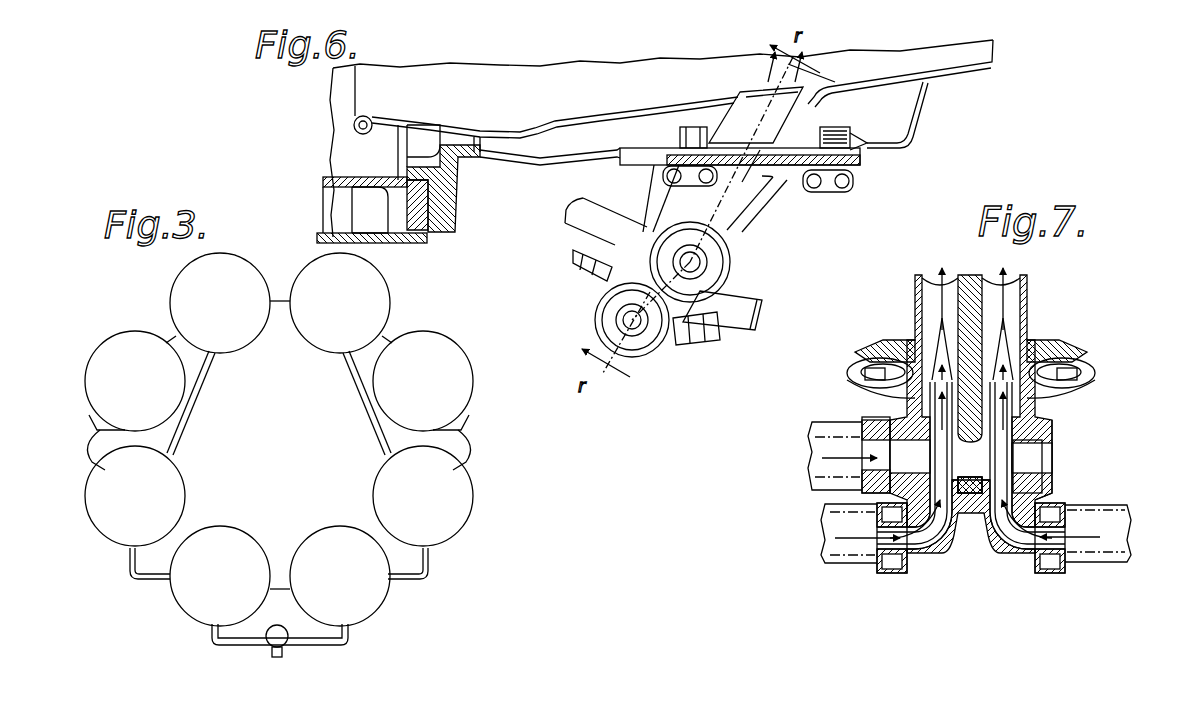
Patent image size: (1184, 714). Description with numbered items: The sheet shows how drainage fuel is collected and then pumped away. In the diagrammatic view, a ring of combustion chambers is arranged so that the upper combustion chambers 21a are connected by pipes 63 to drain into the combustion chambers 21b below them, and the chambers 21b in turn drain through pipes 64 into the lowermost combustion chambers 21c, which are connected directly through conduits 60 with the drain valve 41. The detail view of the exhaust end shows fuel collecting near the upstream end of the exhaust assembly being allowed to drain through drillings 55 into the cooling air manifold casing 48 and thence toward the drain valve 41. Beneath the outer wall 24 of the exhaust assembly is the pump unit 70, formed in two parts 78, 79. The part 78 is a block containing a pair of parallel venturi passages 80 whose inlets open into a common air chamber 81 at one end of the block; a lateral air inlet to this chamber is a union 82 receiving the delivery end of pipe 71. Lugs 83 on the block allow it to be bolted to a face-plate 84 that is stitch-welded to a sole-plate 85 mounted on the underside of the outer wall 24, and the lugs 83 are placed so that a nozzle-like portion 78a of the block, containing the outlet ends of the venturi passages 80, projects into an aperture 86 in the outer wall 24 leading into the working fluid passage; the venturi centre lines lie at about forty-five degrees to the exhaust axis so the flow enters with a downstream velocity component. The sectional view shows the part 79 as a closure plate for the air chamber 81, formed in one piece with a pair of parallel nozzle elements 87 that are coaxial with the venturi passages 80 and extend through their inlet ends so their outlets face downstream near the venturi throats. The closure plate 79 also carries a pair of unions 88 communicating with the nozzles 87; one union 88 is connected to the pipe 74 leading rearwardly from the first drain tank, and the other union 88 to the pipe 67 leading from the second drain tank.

In FIG. 3, the upper combustion chambers 21a is at (303, 272).
In FIG. 3, the combustion chambers 21b is at (388, 487).
In FIG. 3, the lowermost combustion chambers 21c is at (319, 542).
In FIG. 6, the exhaust assembly outer wall 24 is at (987, 66).
In FIG. 3, the drain valve 41 is at (268, 643).
In FIG. 6, the cooling air manifold casing 48 is at (320, 233).
In FIG. 6, the drillings 55 is at (342, 180).
In FIG. 3, the conduits 60 is at (212, 636).
In FIG. 3, the pipes 63 is at (353, 396).
In FIG. 3, the pipes 64 is at (129, 565).
In FIG. 7, the pipe 67 is at (825, 507).
In FIG. 6, the pump unit 70 is at (760, 213).
In FIG. 7, the pump unit 70 is at (1040, 427).
In FIG. 7, the pipe 71 is at (815, 483).
In FIG. 7, the pipe 74 is at (1100, 562).
In FIG. 6, the block 78 is at (665, 190).
In FIG. 7, the block 78 is at (1003, 413).
In FIG. 6, the nozzle-like portion 78a is at (733, 113).
In FIG. 7, the nozzle-like portion 78a is at (915, 290).
In FIG. 6, the closure plate 79 is at (725, 330).
In FIG. 7, the closure plate 79 is at (972, 513).
In FIG. 7, the venturi passages 80 is at (943, 328).
In FIG. 7, the common air chamber 81 is at (1030, 468).
In FIG. 6, the union 82 is at (710, 262).
In FIG. 7, the union 82 is at (893, 433).
In FIG. 7, the lugs 83 is at (855, 358).
In FIG. 6, the face-plate 84 is at (857, 145).
In FIG. 6, the sole-plate 85 is at (920, 113).
In FIG. 6, the aperture 86 is at (727, 100).
In FIG. 7, the nozzle elements 87 is at (930, 388).
In FIG. 6, the unions 88 is at (632, 328).
In FIG. 7, the unions 88 is at (897, 573).